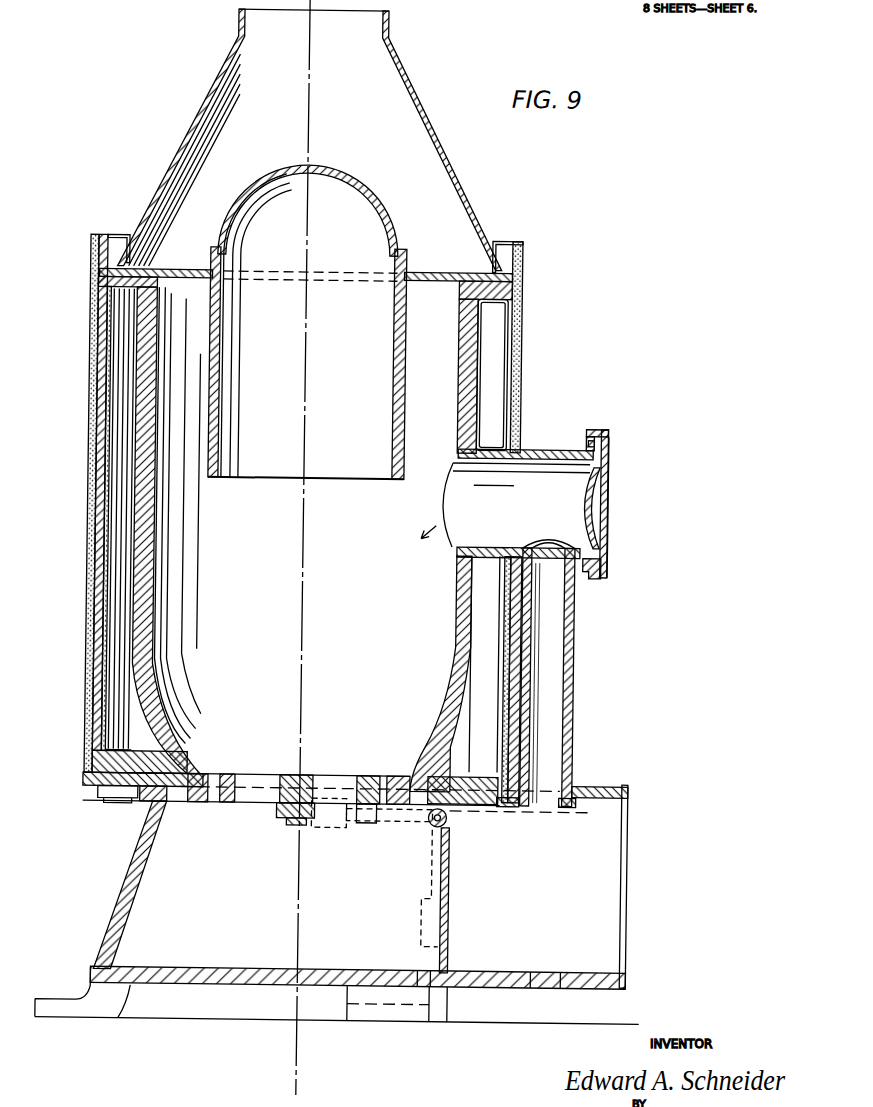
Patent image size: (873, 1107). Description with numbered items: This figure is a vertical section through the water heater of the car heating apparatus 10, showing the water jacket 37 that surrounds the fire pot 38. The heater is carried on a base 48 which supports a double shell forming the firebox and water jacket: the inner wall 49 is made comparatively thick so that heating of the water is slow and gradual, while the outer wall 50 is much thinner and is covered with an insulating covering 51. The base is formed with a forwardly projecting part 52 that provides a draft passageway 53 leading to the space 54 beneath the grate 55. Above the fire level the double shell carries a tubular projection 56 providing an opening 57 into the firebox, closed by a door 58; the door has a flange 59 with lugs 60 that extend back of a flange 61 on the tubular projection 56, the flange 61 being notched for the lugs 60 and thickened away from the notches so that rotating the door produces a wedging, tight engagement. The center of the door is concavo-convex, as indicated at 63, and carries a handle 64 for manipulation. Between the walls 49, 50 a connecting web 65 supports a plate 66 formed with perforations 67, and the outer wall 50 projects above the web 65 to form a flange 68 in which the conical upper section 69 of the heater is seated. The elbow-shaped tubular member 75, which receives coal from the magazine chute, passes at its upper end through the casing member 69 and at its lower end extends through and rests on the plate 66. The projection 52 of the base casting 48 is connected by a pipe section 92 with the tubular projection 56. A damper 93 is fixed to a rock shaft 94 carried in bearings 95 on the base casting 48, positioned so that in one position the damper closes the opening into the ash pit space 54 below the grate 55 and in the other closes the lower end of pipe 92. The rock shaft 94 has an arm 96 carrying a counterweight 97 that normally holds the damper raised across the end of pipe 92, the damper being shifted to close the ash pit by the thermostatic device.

The apparatus 10 is at (303, 547).
The water jacket 37 is at (119, 640).
The fire pot 38 is at (226, 571).
The base 48 is at (129, 878).
The inner wall 49 is at (147, 516).
The outer wall 50 is at (82, 528).
The insulating covering 51 is at (514, 324).
The forwardly projecting part 52 is at (496, 970).
The draft passageway 53 is at (598, 874).
The space under the grate 54 is at (338, 898).
The grate 55 is at (306, 775).
The tubular projection 56 is at (535, 447).
The opening 57 is at (536, 486).
The door 58 is at (598, 436).
The flange 59 is at (588, 426).
The lugs 60 is at (585, 439).
The flange 61 is at (604, 554).
The concavo-convex center part 63 is at (584, 508).
The handle 64 is at (603, 493).
The connecting web 65 is at (487, 283).
The plate 66 is at (192, 264).
The perforations 67 is at (158, 267).
The flange 68 is at (93, 261).
The conical upper section 69 is at (414, 100).
The elbow-shaped tubular member 75 is at (325, 166).
The pipe section 92 is at (571, 684).
The damper 93 is at (532, 814).
The rock shaft 94 is at (450, 818).
The bearings 95 is at (504, 715).
The arm 96 is at (400, 820).
The counterweight 97 is at (330, 827).